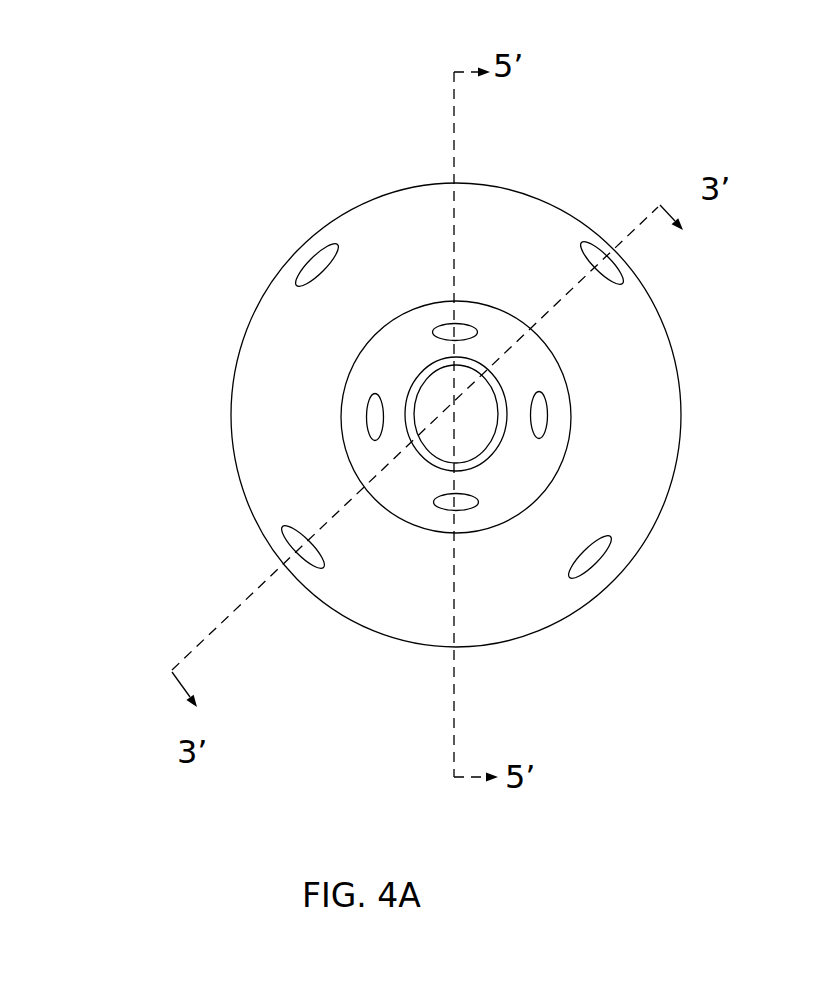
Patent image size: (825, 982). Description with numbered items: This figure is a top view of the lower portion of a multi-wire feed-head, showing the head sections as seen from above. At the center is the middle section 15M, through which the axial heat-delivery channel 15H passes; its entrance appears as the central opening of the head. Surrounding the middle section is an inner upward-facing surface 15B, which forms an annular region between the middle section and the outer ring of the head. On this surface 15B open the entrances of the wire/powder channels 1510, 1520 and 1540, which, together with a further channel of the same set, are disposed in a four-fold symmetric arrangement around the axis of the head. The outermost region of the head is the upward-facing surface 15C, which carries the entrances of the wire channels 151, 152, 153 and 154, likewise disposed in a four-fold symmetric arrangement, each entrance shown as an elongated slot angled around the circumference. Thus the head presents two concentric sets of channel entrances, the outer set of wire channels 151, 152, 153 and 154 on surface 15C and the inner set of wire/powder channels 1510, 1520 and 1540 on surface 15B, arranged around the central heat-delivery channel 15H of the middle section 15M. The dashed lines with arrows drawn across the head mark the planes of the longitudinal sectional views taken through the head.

The upward-facing surface 15C is at (323, 355).
The upward-facing surface 15B is at (532, 370).
The middle section 15M is at (412, 376).
The axial heat-delivery channel 15H is at (463, 417).
The wire channel 151 is at (595, 257).
The wire channel 152 is at (315, 558).
The wire channel 153 is at (227, 485).
The wire channel 154 is at (595, 563).
The wire/powder channel 1510 is at (442, 330).
The wire/powder channel 1520 is at (463, 502).
The wire/powder channel 1540 is at (538, 415).